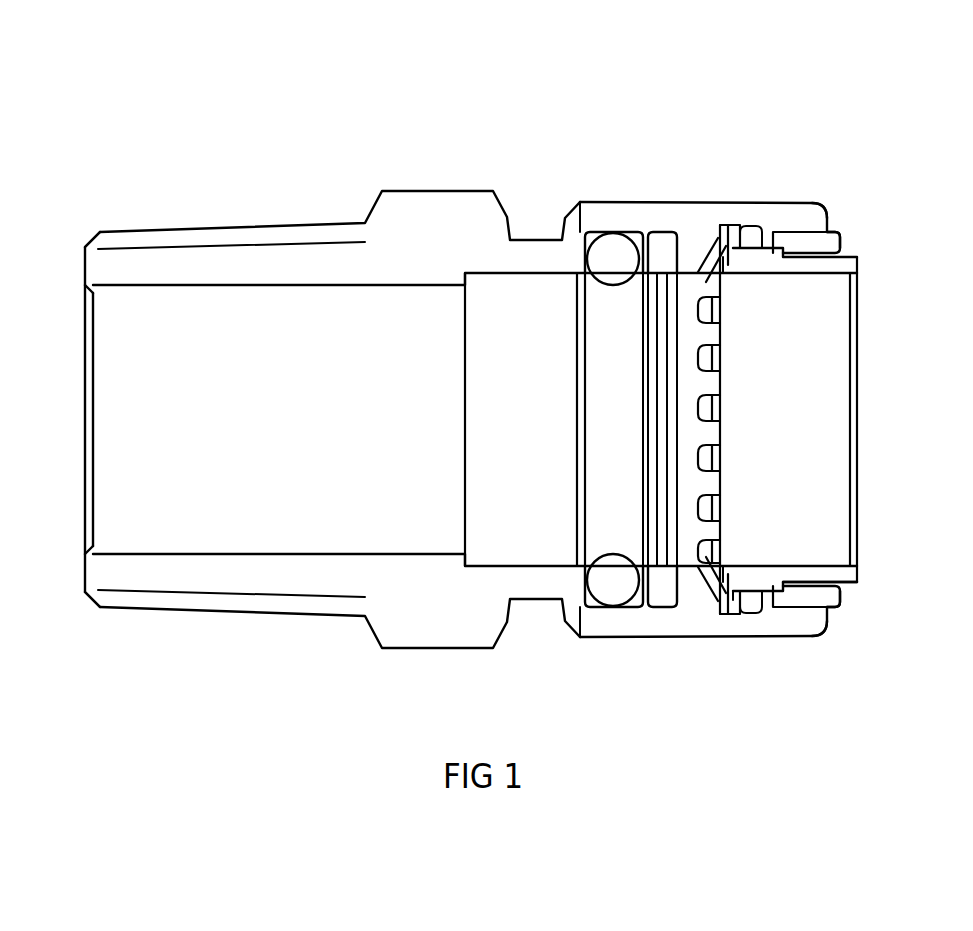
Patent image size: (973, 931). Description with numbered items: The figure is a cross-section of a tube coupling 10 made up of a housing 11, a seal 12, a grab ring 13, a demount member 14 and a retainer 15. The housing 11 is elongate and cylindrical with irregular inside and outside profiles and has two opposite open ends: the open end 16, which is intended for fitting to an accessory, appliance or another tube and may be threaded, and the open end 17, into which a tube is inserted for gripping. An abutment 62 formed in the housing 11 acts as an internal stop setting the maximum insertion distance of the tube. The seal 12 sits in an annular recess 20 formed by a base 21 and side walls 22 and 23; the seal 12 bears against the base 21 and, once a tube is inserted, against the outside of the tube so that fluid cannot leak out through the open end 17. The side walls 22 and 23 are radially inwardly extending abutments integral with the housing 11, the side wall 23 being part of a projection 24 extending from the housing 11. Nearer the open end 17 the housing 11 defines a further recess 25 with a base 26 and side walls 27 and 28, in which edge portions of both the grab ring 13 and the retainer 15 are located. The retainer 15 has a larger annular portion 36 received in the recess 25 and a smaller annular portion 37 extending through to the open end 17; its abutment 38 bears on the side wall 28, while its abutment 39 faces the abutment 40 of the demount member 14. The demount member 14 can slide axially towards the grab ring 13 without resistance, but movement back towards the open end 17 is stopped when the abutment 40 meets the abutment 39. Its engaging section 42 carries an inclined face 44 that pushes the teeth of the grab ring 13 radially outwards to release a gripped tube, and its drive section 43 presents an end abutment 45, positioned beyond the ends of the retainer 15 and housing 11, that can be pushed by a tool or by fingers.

The tube coupling 10 is at (322, 138).
The housing 11 is at (293, 604).
The open end 16 is at (84, 300).
The abutment 62 is at (468, 560).
The seal 12 is at (625, 250).
The annular recess 20 is at (593, 248).
The base 21 is at (600, 600).
The side wall 22 is at (590, 588).
The side wall 23 is at (627, 602).
The projection 24 is at (668, 248).
The grab ring 13 is at (700, 600).
The open end 17 is at (825, 215).
The abutment 38 is at (773, 227).
The annular portion 37 is at (825, 245).
The abutment 39 is at (775, 254).
The side wall 28 is at (793, 590).
The demount member 14 is at (806, 572).
The abutment 40 is at (824, 623).
The retainer 15 is at (846, 598).
The side wall 27 is at (733, 215).
The recess 25 is at (748, 228).
The engaging section 42 is at (752, 262).
The base 26 is at (758, 606).
The annular portion 36 is at (740, 607).
The inclined face 44 is at (742, 576).
The drive section 43 is at (850, 288).
The end abutment 45 is at (857, 577).